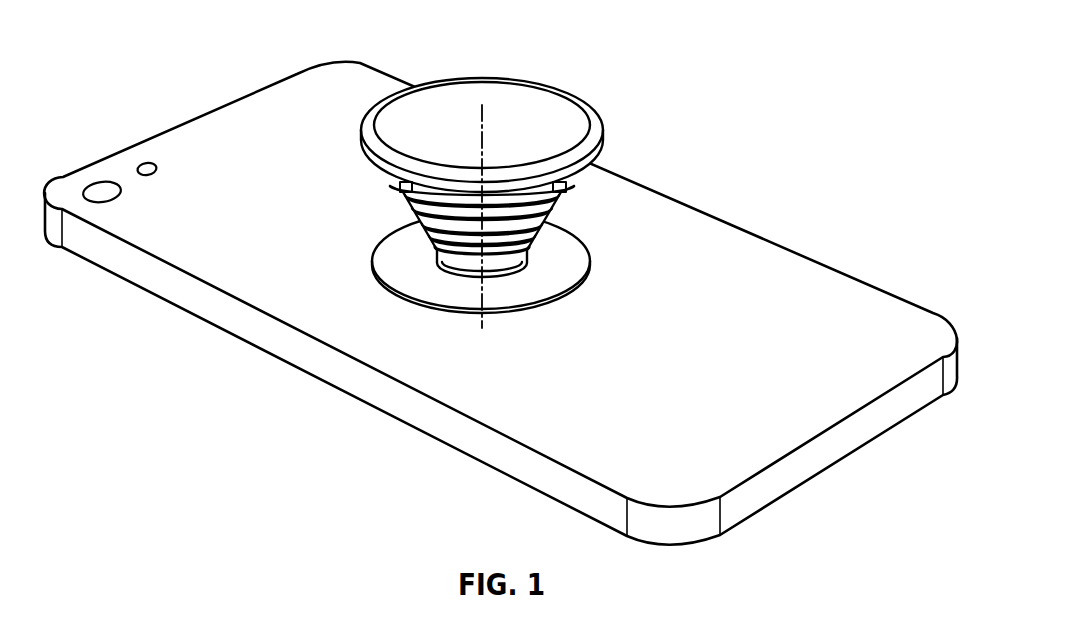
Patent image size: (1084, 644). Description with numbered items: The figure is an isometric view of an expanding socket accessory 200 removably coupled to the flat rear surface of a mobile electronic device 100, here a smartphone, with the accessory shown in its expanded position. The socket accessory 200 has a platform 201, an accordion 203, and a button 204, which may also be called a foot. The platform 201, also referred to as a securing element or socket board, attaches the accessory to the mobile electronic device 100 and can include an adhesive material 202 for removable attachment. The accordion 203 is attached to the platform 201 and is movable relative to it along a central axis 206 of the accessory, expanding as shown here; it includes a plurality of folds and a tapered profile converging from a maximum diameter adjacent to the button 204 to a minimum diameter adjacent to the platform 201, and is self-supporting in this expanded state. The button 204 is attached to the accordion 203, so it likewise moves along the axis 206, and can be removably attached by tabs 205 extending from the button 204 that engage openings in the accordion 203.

The mobile electronic device 100 is at (227, 273).
The expanding socket accessory 200 is at (439, 221).
The platform 201 is at (573, 257).
The adhesive material 202 is at (412, 298).
The accordion 203 is at (439, 289).
The button 204 is at (497, 100).
The tabs 205 is at (557, 187).
The central axis 206 is at (492, 157).